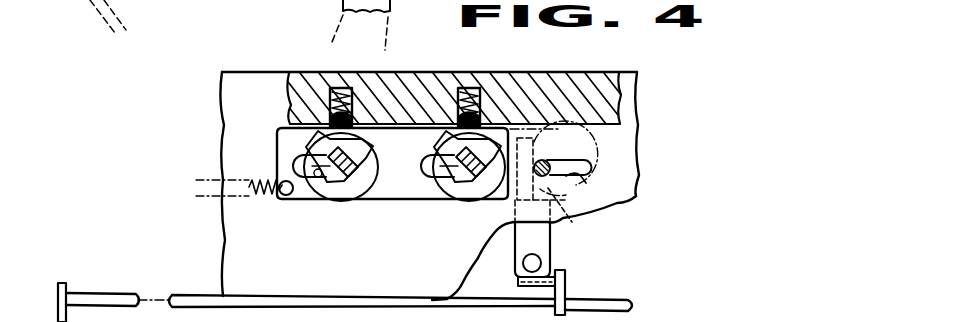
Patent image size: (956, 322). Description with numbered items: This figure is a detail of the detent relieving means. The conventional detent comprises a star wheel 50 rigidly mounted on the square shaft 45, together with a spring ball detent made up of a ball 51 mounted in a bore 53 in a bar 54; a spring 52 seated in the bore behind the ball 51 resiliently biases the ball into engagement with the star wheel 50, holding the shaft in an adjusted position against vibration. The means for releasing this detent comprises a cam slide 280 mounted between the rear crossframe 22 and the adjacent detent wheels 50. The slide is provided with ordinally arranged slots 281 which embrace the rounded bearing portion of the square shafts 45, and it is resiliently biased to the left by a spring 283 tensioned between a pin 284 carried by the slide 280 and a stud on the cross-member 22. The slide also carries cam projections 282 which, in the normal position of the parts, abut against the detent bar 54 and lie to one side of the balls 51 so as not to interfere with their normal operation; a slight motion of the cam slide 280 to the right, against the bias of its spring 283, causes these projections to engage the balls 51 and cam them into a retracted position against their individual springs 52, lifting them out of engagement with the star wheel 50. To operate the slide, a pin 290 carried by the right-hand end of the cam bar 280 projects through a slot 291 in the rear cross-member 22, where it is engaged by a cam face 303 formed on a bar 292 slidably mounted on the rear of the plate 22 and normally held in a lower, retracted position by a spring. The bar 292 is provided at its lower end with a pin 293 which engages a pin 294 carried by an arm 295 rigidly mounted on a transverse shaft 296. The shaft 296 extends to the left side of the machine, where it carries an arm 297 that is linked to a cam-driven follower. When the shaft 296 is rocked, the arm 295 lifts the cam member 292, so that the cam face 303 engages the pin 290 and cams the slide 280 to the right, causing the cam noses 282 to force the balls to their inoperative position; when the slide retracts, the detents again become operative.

The rear crossframe 22 is at (628, 155).
The square shaft 45 is at (466, 198).
The star wheel 50 is at (438, 152).
The ball 51 is at (328, 125).
The spring 52 is at (330, 101).
The bore 53 is at (341, 87).
The detent bar 54 is at (578, 82).
The cam slide 280 is at (387, 187).
The slots 281 is at (323, 176).
The cam projections 282 is at (443, 130).
The spring 283 is at (262, 193).
The pin 284 is at (287, 196).
The pin 290 is at (547, 162).
The slot 291 is at (586, 182).
The bar 292 is at (546, 243).
The pin 293 is at (541, 263).
The pin 294 is at (518, 281).
The arm 295 is at (566, 281).
The transverse shaft 296 is at (630, 305).
The arm 297 is at (58, 300).
The cam face 303 is at (576, 212).